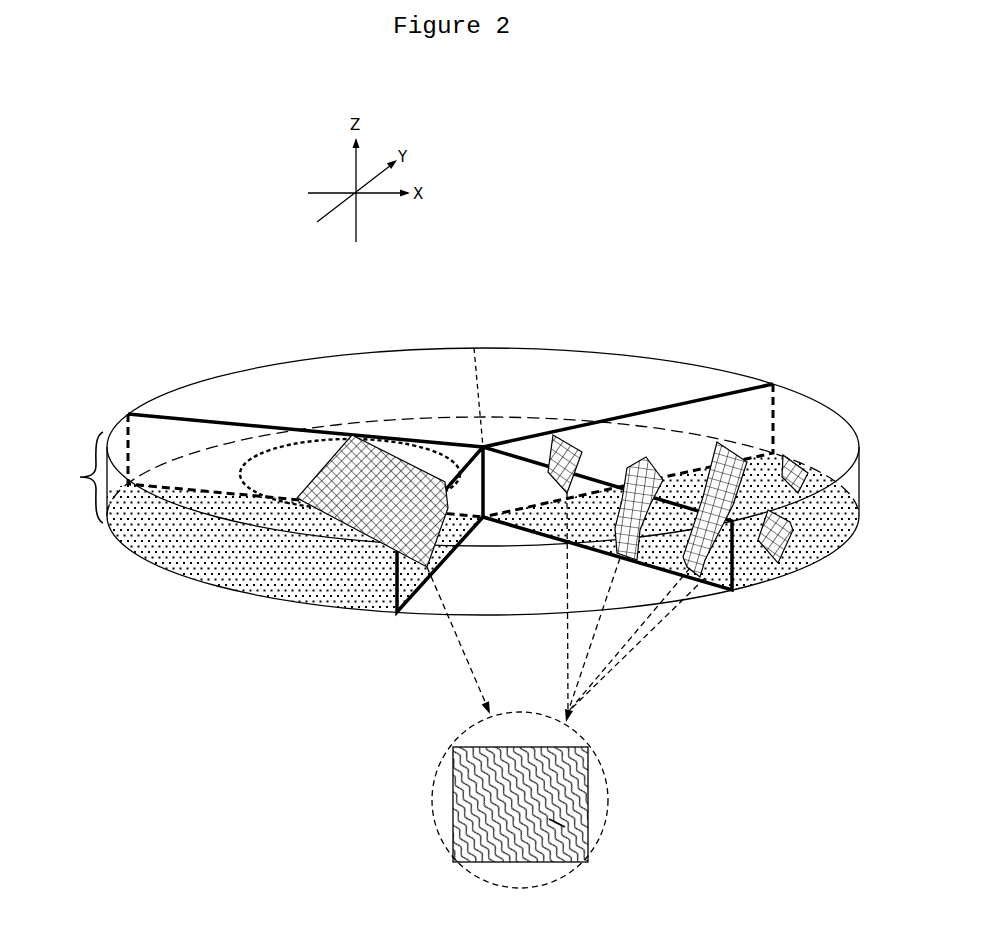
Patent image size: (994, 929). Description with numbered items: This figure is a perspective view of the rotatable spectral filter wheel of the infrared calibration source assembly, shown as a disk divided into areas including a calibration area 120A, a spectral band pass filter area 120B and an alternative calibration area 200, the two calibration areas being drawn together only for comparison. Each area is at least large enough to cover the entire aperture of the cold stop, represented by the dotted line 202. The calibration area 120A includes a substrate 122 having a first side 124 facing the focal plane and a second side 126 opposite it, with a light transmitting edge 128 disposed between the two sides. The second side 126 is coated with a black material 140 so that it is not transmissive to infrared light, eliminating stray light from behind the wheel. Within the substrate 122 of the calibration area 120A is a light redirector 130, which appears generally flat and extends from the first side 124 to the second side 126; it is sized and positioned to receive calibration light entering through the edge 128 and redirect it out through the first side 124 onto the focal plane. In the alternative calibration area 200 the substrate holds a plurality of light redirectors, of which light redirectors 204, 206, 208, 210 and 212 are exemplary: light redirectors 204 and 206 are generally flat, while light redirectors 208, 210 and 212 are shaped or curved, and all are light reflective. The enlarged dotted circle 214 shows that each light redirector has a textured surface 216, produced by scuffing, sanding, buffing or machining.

The alternative calibration area 200 is at (456, 506).
The calibration area 120A is at (197, 441).
The spectral band pass filter area 120B is at (585, 374).
The first side 124 is at (122, 447).
The light transmitting edge 128 is at (75, 477).
The material 140 is at (175, 553).
The substrate 122 is at (276, 587).
The second side 126 is at (320, 613).
The dotted line 202 is at (297, 443).
The light redirector 130 is at (396, 437).
The light redirector 204 is at (552, 436).
The light redirector 206 is at (700, 578).
The light redirector 208 is at (612, 552).
The light redirector 210 is at (777, 564).
The light redirector 212 is at (800, 487).
The enlarged dotted circle 214 is at (604, 760).
The textured surface 216 is at (554, 820).